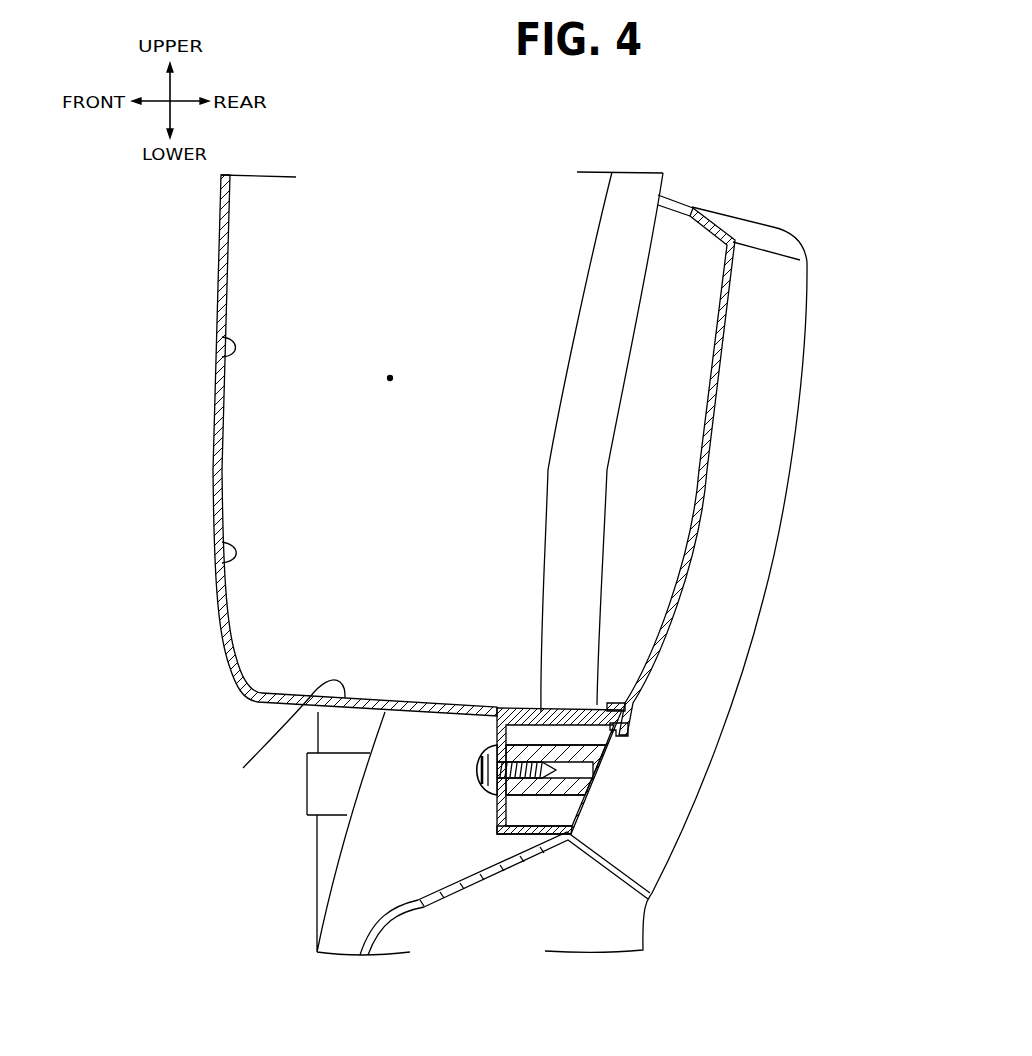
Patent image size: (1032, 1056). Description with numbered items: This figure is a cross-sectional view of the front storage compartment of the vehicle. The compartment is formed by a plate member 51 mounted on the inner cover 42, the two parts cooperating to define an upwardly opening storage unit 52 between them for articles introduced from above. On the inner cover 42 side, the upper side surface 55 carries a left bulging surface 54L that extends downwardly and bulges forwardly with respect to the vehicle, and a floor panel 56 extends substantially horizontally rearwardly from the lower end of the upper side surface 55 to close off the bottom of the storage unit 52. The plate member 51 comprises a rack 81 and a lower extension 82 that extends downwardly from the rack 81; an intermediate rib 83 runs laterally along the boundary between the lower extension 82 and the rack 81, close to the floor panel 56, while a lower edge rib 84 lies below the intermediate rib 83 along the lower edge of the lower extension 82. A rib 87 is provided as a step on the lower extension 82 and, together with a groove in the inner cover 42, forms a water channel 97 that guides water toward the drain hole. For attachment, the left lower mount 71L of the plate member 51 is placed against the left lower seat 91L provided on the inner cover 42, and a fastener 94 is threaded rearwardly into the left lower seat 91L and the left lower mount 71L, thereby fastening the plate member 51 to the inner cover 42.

The inner cover 42 is at (213, 287).
The upper side surface 55 is at (213, 336).
The storage unit 52 is at (390, 378).
The left bulging surface 54L is at (213, 553).
The floor panel 56 is at (277, 738).
The plate member 51 is at (817, 260).
The rack 81 is at (810, 380).
The lower extension 82 is at (678, 867).
The intermediate rib 83 is at (608, 706).
The water channel 97 is at (629, 727).
The rib 87 is at (613, 747).
The fastener 94 is at (487, 777).
The left lower seat 91L is at (496, 815).
The left lower mount 71L is at (503, 832).
The lower edge rib 84 is at (533, 840).